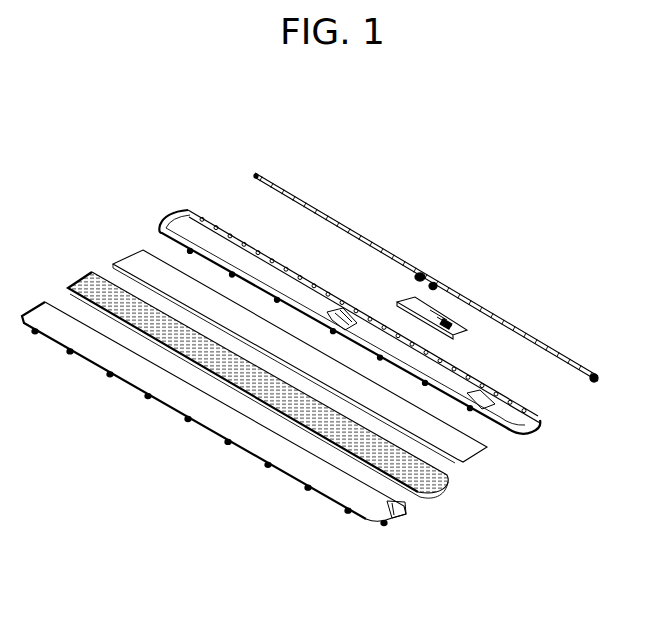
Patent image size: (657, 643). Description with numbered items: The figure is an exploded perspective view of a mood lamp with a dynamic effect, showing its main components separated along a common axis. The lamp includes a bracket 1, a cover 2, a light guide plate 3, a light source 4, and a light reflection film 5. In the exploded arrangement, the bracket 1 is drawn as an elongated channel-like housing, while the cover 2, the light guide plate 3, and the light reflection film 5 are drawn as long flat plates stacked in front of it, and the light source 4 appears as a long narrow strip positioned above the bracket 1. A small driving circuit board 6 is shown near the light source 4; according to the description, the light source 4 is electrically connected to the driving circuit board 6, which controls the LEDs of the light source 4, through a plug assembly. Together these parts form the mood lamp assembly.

The bracket 1 is at (542, 427).
The cover 2 is at (339, 486).
The light guide plate 3 is at (443, 489).
The light source 4 is at (549, 338).
The light reflection film 5 is at (477, 461).
The driving circuit board 6 is at (438, 307).